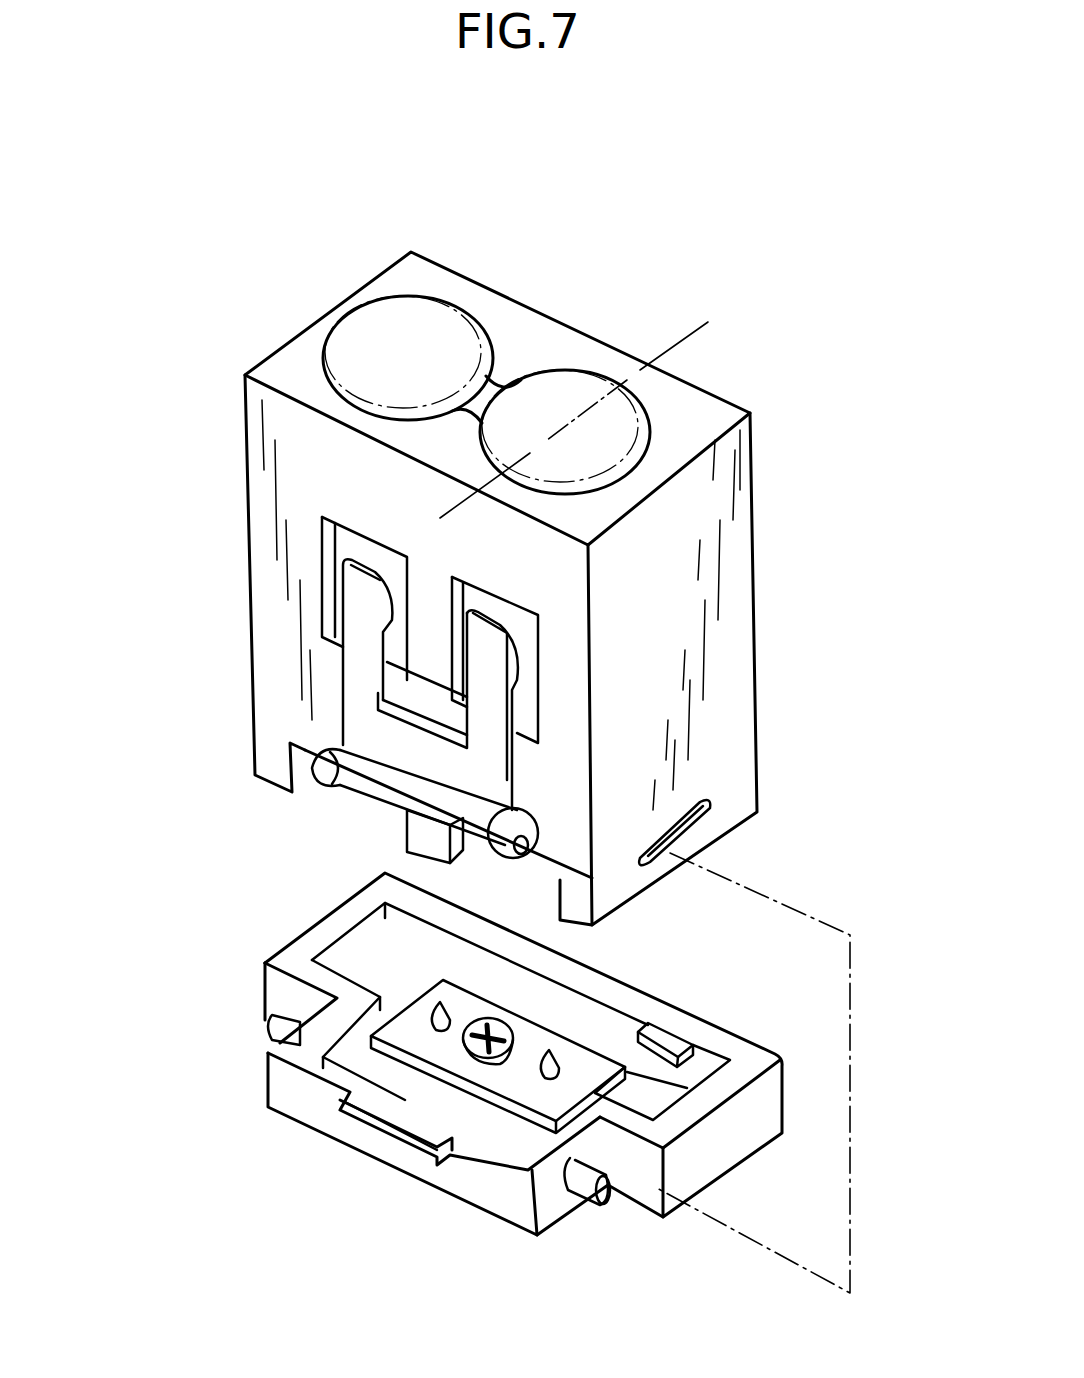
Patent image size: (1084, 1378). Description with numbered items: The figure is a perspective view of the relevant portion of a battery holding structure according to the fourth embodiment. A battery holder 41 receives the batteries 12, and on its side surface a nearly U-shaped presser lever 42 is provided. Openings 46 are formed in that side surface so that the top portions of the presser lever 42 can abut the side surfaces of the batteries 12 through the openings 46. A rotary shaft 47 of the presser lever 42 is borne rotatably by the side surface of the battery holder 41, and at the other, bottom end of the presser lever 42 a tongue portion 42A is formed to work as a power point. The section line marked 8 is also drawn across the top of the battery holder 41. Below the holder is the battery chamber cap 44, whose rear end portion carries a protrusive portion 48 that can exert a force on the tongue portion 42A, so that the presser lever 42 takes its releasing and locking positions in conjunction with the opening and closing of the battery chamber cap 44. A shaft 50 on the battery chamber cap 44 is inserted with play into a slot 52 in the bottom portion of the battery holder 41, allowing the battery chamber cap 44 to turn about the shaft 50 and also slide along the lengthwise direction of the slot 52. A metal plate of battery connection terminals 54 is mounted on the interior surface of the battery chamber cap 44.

The section line 8- 8 is at (695, 338).
The batteries 12 is at (575, 385).
The battery holder 41 is at (743, 703).
The presser lever 42 is at (355, 703).
The tongue portion 42A is at (420, 827).
The battery chamber cap 44 is at (745, 1115).
The openings 46 is at (368, 545).
The rotary shaft 47 is at (555, 840).
The protrusive portion 48 is at (380, 1112).
The shaft 50 is at (265, 1022).
The slot 52 is at (747, 813).
The metal plate of battery connection terminals 54 is at (545, 1078).